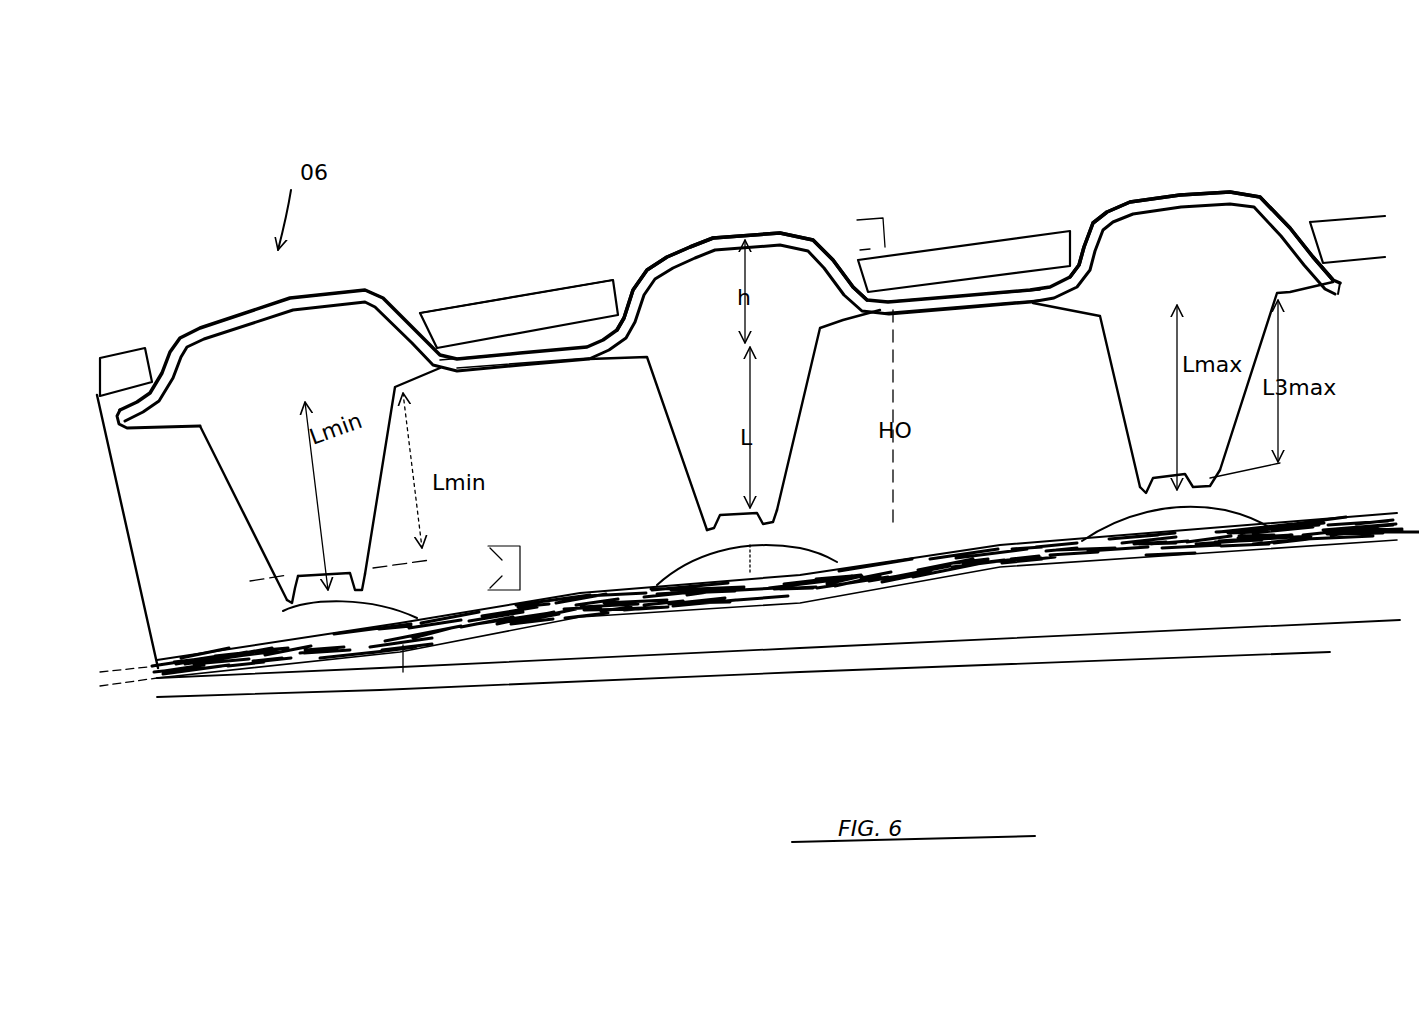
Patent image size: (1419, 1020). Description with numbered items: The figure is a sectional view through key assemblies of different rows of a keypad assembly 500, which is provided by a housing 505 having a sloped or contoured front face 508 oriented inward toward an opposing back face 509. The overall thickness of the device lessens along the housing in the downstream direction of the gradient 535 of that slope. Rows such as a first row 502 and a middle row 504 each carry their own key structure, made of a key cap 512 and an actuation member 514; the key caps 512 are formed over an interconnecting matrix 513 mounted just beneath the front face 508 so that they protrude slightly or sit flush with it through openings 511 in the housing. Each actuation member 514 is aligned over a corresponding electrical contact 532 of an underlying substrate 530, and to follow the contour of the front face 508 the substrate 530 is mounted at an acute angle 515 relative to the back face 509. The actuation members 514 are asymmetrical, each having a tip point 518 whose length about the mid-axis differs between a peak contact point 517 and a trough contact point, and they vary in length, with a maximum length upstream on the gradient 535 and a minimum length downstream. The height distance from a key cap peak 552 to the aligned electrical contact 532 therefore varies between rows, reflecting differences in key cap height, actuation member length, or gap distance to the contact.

The keypad assembly 500 is at (523, 212).
The first row 502 is at (1228, 156).
The middle row 504 is at (724, 192).
The housing 505 is at (540, 270).
The front face 508 is at (452, 300).
The back face 509 is at (642, 665).
The openings 511 is at (618, 286).
The key cap 512 is at (340, 330).
The interconnecting matrix 513 is at (538, 362).
The actuation member 514 is at (268, 457).
The acute angle 515 is at (750, 653).
The peak contact point 517 is at (288, 598).
The tip point 518 is at (680, 535).
The substrate 530 is at (542, 600).
The electrical contact 532 is at (388, 612).
The gradient 535 is at (1068, 166).
The key cap peak 552 is at (288, 305).